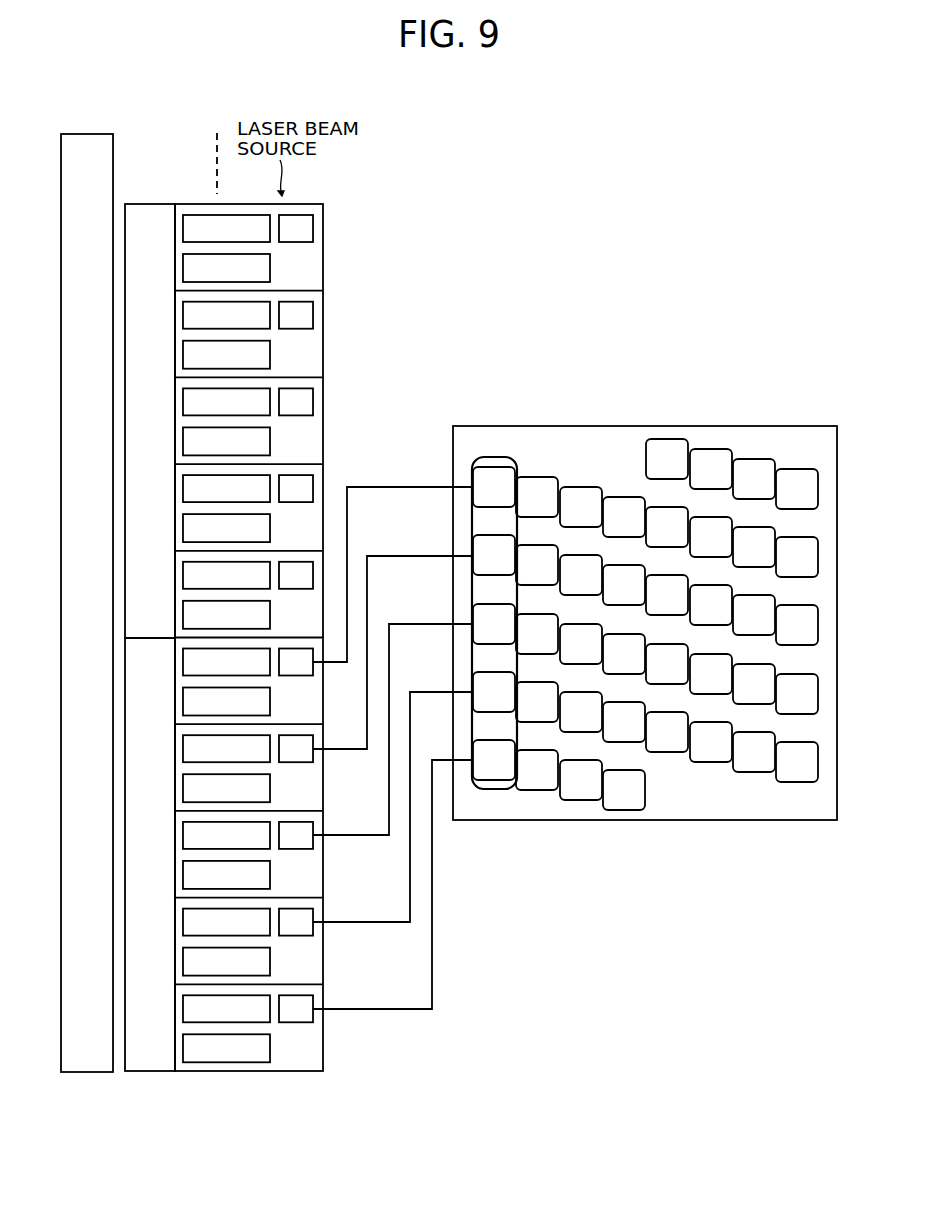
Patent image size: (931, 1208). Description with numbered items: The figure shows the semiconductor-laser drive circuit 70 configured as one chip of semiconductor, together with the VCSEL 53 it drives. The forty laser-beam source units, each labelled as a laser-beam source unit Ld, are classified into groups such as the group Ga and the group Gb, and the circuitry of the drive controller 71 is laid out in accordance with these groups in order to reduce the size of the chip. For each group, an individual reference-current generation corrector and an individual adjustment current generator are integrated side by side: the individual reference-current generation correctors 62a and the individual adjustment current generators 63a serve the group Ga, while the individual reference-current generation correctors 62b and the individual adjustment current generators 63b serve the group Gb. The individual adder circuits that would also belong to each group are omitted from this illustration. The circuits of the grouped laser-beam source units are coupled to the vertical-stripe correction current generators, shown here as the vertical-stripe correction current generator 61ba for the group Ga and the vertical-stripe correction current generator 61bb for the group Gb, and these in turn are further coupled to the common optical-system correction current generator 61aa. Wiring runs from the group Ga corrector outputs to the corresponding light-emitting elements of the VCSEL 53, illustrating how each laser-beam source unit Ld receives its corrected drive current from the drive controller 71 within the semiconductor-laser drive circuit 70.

The semiconductor-laser drive circuit 70 is at (462, 325).
The drive controller 71 is at (190, 117).
The VCSEL 53 is at (747, 405).
The optical-system correction current generator 61aa is at (87, 603).
The vertical-stripe correction current generator 61bb is at (150, 421).
The vertical-stripe correction current generator 61ba is at (150, 854).
The individual reference-current generation corrector 62a is at (226, 836).
The individual reference-current generation corrector 62b is at (226, 402).
The individual adjustment current generator 63a is at (226, 875).
The individual adjustment current generator 63b is at (226, 441).
The laser-beam source unit Ld is at (313, 228).
The group Ga is at (323, 1043).
The group Gb is at (323, 258).